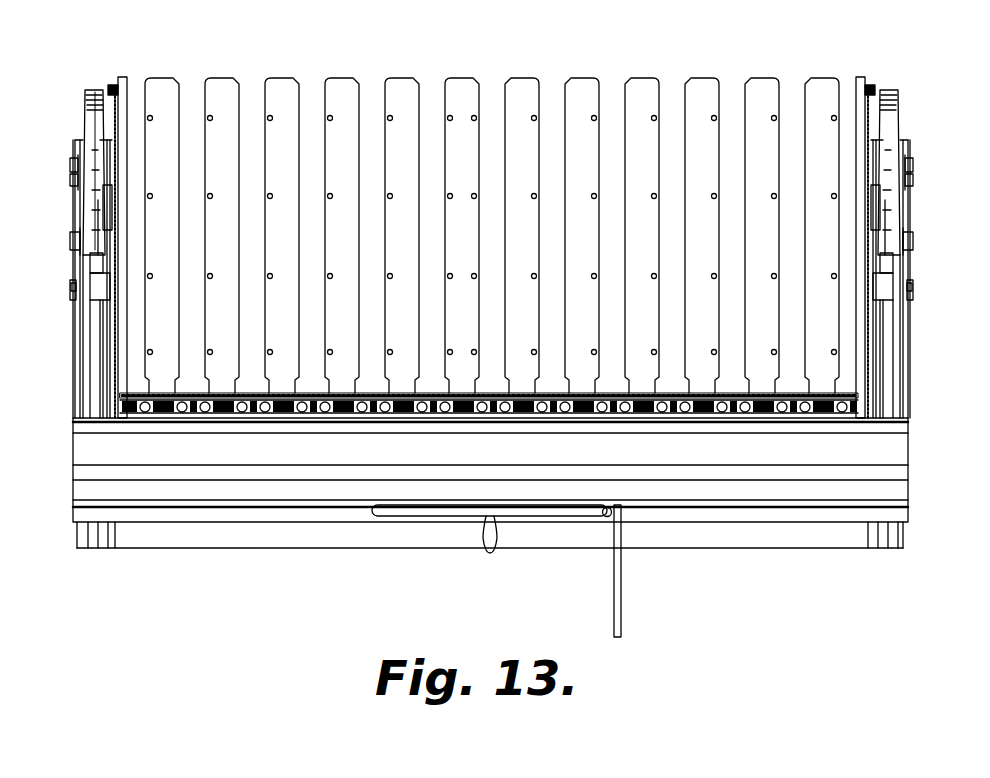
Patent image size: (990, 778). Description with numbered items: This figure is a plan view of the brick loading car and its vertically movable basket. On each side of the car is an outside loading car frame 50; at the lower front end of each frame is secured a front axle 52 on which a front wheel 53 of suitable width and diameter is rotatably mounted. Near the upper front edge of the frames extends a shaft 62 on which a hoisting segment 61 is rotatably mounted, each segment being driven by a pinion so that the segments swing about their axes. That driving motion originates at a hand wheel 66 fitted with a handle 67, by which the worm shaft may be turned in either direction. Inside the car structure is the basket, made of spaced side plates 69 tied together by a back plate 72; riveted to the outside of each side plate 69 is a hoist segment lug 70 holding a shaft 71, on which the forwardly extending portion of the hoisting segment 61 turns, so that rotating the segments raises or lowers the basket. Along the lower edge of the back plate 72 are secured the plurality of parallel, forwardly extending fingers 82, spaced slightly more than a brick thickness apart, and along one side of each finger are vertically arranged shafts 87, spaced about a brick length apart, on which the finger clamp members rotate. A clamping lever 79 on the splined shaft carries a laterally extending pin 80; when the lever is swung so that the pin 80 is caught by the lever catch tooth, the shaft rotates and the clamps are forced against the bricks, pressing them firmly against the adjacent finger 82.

The outside loading car frame 50 is at (110, 358).
The front axle 52 is at (70, 170).
The front wheel 53 is at (117, 113).
The hoisting segment 61 is at (88, 263).
The shaft 62 is at (70, 295).
The hand wheel 66 is at (408, 513).
The handle 67 is at (487, 553).
The side plate 69 is at (92, 113).
The hoist segment lug 70 is at (70, 240).
The shaft 71 is at (110, 202).
The back plate 72 is at (222, 393).
The clamping lever 79 is at (614, 570).
The pin 80 is at (603, 518).
The fingers 82 is at (458, 83).
The vertically arranged shaft 87 is at (652, 118).